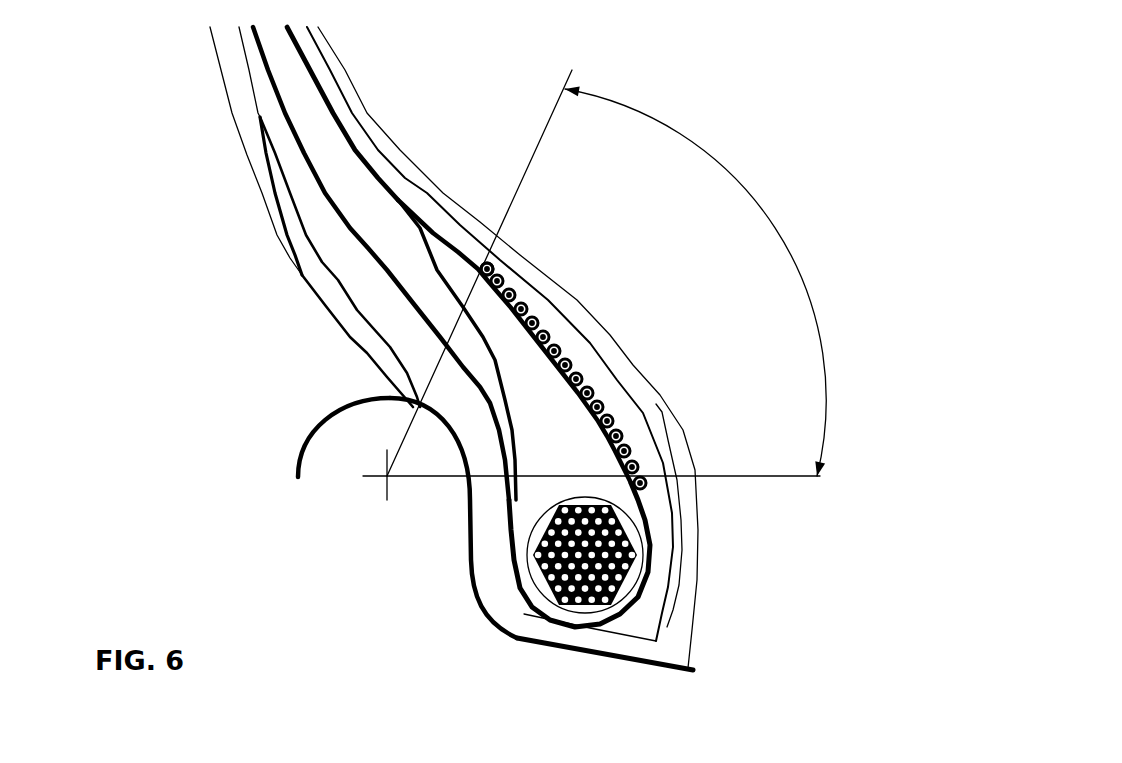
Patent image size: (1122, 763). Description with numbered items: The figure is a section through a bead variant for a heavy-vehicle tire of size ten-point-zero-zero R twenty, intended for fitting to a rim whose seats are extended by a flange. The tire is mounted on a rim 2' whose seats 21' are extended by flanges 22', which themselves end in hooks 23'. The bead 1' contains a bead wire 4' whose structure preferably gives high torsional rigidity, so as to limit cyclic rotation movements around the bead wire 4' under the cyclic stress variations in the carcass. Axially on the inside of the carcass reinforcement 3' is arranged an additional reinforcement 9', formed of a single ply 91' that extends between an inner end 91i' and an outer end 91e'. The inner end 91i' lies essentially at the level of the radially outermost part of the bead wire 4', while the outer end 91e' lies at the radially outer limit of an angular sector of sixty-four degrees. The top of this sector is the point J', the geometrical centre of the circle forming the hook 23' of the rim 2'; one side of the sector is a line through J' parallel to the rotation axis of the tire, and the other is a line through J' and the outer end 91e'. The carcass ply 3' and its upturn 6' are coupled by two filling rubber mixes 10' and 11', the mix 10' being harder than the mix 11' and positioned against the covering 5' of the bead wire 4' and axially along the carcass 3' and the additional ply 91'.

The bead 1' is at (381, 314).
The rim 2' is at (508, 394).
The carcass reinforcement 3' is at (393, 113).
The bead wire 4' is at (663, 555).
The covering of the bead wire 5' is at (550, 594).
The upturn of the carcass ply 6' is at (315, 217).
The additional reinforcement 9' is at (528, 334).
The filling rubber mix 10' is at (486, 350).
The filling rubber mix 11' is at (357, 288).
The rim seat 21' is at (590, 662).
The rim flange 22' is at (410, 518).
The hook 23' is at (311, 436).
The ply of the additional reinforcement 91' is at (575, 360).
The outer end of the ply 91e' is at (550, 235).
The inner end of the ply 91i' is at (712, 494).
The geometrical centre of the hook circle J' is at (591, 294).